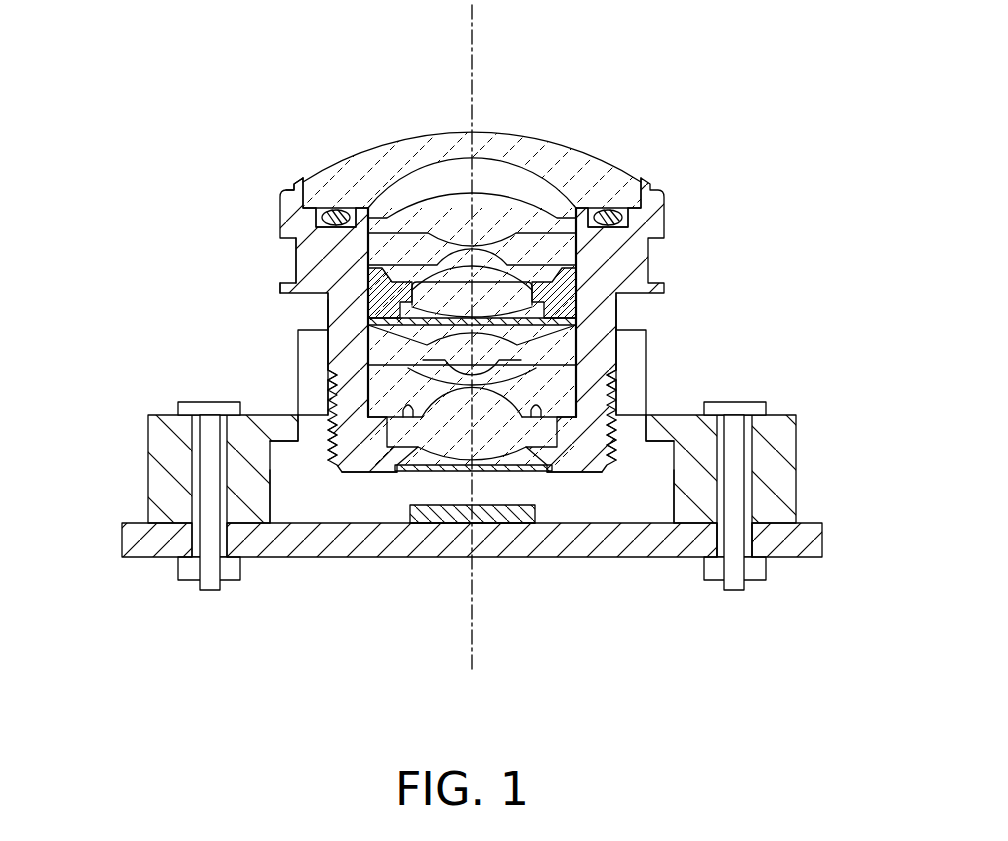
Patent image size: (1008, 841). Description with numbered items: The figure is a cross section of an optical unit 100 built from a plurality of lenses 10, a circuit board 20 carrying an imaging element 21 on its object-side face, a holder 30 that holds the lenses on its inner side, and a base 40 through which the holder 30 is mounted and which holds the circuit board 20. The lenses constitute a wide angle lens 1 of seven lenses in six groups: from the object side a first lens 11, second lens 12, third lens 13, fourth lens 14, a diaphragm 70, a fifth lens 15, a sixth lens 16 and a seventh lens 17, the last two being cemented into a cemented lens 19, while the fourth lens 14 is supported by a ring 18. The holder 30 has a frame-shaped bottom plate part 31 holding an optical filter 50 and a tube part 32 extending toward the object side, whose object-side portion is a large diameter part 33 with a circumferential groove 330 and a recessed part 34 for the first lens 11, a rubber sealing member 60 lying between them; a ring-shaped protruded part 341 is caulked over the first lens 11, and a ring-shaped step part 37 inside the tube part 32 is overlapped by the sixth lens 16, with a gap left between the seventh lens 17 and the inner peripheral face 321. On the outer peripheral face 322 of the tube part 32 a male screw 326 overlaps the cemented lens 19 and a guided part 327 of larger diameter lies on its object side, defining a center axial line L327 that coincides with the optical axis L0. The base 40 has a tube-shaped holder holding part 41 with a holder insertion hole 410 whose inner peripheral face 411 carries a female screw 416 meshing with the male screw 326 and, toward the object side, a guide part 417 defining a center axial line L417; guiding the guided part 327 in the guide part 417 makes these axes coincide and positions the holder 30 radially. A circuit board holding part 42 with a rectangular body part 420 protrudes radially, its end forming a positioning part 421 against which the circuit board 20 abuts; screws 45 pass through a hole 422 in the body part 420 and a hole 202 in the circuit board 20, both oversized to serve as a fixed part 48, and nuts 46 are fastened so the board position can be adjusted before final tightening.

The optical unit 100 is at (307, 130).
The plurality of lenses 10 is at (412, 371).
The wide angle lens 1 is at (585, 134).
The first lens 11 is at (555, 170).
The second lens 12 is at (550, 208).
The third lens 13 is at (545, 245).
The fourth lens 14 is at (545, 260).
The fifth lens 15 is at (565, 330).
The sixth lens 16 is at (560, 356).
The seventh lens 17 is at (565, 392).
The ring 18 is at (578, 288).
The cemented lens 19 is at (714, 311).
The diaphragm 70 is at (578, 323).
The holder 30 is at (667, 200).
The tube part 32 is at (331, 314).
The large diameter part 33 is at (282, 287).
The circumferential groove 330 is at (296, 258).
The inner peripheral face 321 is at (580, 398).
The outer peripheral face 322 is at (400, 366).
The guided part 327 is at (339, 304).
The male screw 326 is at (424, 543).
The recessed part 34 is at (310, 194).
The protruded part 341 is at (296, 176).
The sealing member 60 is at (340, 210).
The holder holding part 41 is at (307, 358).
The holder insertion hole 410 is at (332, 393).
The inner peripheral face 411 is at (328, 370).
The female screw 416 is at (325, 425).
The guide part 417 is at (328, 328).
The base 40 is at (800, 437).
The circuit board holding part 42 is at (780, 487).
The body part 420 is at (778, 507).
The positioning part 421 is at (676, 535).
The hole 422 is at (512, 460).
The fixed part 48 is at (754, 447).
The screw 45 is at (740, 468).
The nut 46 is at (760, 572).
The circuit board 20 is at (347, 557).
The imaging element 21 is at (452, 523).
The hole 202 is at (707, 550).
The step part 37 is at (372, 473).
The bottom plate part 31 is at (545, 455).
The optical filter 50 is at (503, 490).
The optical axis L0 is at (567, 336).
The center axial line L327 is at (567, 336).
The center axial line L417 is at (480, 29).